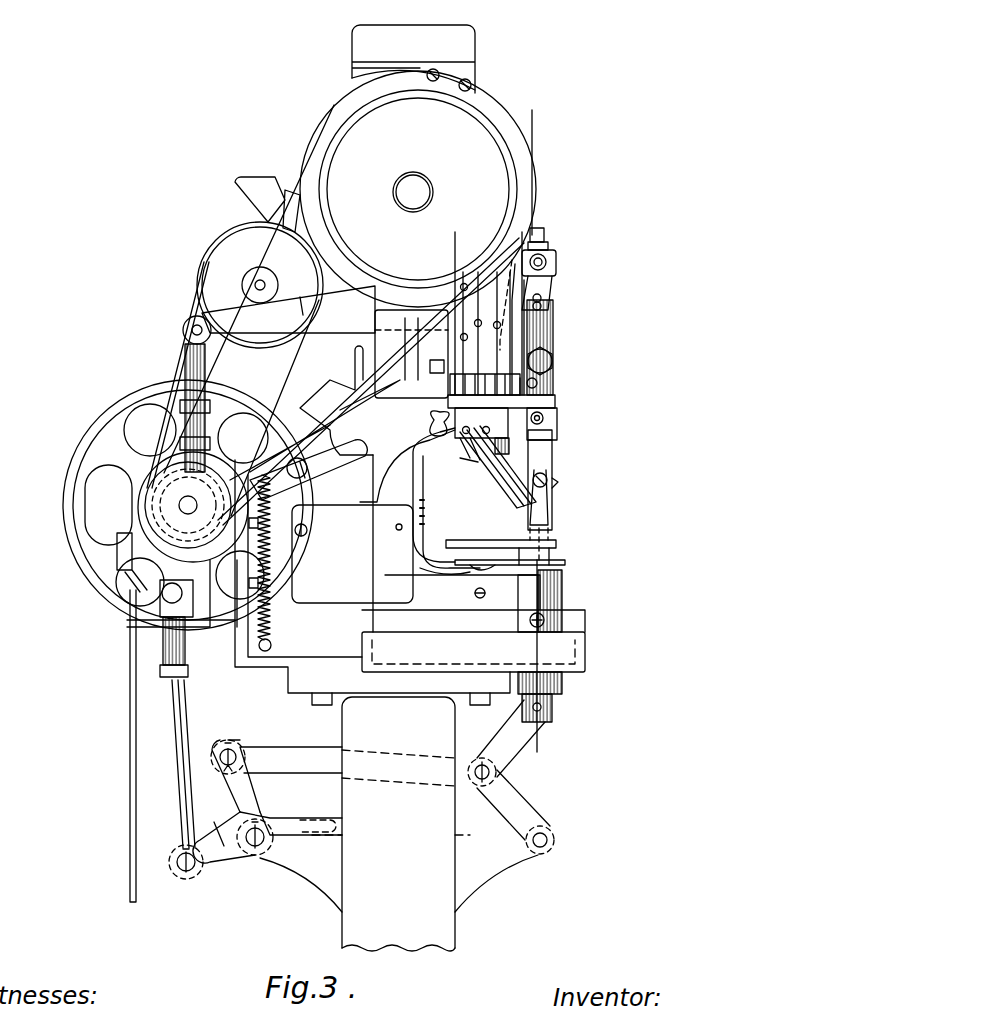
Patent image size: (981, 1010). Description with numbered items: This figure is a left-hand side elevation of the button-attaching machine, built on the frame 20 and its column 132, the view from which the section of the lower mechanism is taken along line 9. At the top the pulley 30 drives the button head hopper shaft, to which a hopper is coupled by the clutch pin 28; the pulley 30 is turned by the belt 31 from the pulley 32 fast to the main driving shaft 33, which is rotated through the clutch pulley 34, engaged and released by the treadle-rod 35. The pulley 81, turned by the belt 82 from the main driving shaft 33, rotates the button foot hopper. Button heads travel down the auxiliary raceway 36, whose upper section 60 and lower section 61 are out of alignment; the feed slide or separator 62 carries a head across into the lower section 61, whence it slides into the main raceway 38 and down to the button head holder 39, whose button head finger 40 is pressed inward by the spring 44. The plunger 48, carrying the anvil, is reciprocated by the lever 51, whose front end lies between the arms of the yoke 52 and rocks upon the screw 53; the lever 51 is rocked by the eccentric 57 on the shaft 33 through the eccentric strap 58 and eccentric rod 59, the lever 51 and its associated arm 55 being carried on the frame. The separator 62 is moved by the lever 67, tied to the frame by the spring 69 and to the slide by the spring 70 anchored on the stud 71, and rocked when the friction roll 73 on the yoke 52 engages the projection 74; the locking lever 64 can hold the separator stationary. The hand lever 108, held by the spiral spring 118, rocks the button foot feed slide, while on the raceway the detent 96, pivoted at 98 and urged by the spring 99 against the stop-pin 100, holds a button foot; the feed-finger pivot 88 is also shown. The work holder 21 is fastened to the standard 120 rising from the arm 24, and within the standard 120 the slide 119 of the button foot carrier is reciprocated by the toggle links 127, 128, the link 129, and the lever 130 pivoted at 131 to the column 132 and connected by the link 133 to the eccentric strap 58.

The head frame / needle bar support 9 is at (528, 178).
The frame 20 is at (310, 425).
The holder for the work or fabric 21 is at (556, 545).
The arm 24 is at (436, 606).
The clutch pin 28 is at (428, 190).
The pulley 30 is at (330, 140).
The belt 31 is at (352, 398).
The pulley 32 is at (176, 510).
The main driving shaft 33 is at (150, 500).
The clutch pulley 34 is at (72, 444).
The treadle-rod 35 is at (130, 747).
The auxiliary raceway 36 is at (475, 296).
The main raceway 38 is at (500, 488).
The button head holder 39 is at (570, 503).
The button head finger 40 is at (550, 526).
The spring 44 is at (548, 488).
The plunger 48 is at (553, 325).
The lever 51 is at (626, 266).
The yoke 52 is at (552, 288).
The screw 53 is at (545, 230).
The arm 55 is at (380, 322).
The eccentric 57 is at (200, 622).
The eccentric strap 58 is at (118, 548).
The eccentric rod 59 is at (210, 362).
The upper section 60 is at (458, 352).
The lower section 61 is at (462, 460).
The feed slide or separator 62 is at (432, 418).
The locking lever 64 is at (532, 404).
The lever 67 is at (524, 332).
The spring 69 is at (538, 384).
The spring 70 is at (518, 444).
The stud 71 is at (545, 420).
The friction roll 73 is at (560, 300).
The projection 74 is at (548, 262).
The pulley 81 is at (222, 262).
The belt 82 is at (180, 360).
The pivot 88 is at (395, 527).
The detent 96 is at (462, 566).
The pivot 98 is at (440, 566).
The spring 99 is at (490, 568).
The stop-pin 100 is at (472, 568).
The hand lever 108 is at (350, 460).
The spiral spring 118 is at (275, 620).
The slide 119 is at (553, 707).
The standard 120 is at (562, 600).
The toggle link 127 is at (512, 752).
The toggle link 128 is at (512, 800).
The link 129 is at (283, 752).
The lever 130 is at (272, 806).
The pivot 131 is at (258, 848).
The column 132 is at (452, 925).
The link 133 is at (182, 700).